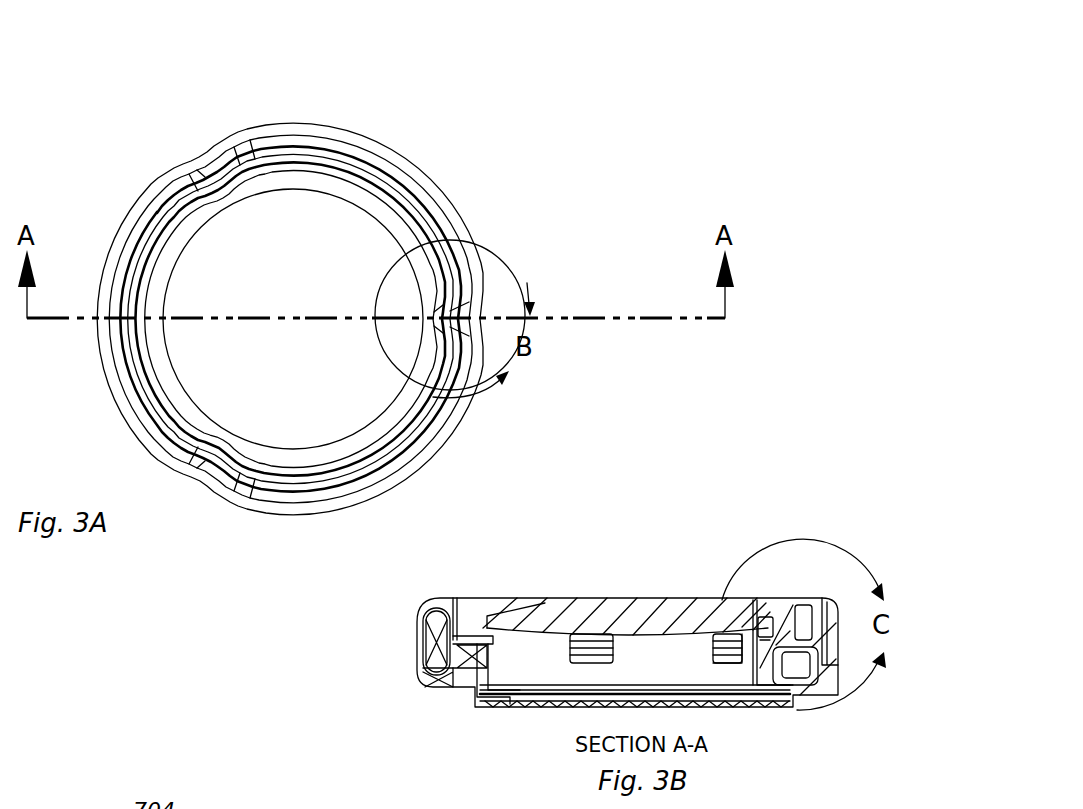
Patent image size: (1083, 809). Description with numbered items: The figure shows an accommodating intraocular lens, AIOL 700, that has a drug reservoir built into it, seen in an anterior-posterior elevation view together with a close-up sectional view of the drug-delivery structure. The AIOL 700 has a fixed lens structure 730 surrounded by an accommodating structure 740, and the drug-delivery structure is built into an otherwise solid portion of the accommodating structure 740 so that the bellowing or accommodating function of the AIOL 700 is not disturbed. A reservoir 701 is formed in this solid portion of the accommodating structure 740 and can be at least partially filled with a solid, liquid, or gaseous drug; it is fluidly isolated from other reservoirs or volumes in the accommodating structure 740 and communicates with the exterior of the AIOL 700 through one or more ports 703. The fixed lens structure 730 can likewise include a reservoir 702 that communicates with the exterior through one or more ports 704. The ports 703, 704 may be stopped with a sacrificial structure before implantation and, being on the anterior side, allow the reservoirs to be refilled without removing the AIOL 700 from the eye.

In FIG. 3A, the AIOL 700 is at (259, 260).
In FIG. 3A, the accommodating structure 740 is at (145, 232).
In FIG. 3B, the accommodating structure 740 is at (460, 612).
In FIG. 3A, the fixed lens structure 730 is at (338, 240).
In FIG. 3B, the fixed lens structure 730 is at (615, 612).
In FIG. 3B, the reservoir 701 is at (832, 602).
In FIG. 3B, the reservoir 702 is at (740, 604).
In FIG. 3B, the ports 703 is at (805, 605).
In FIG. 3B, the ports 704 is at (760, 605).